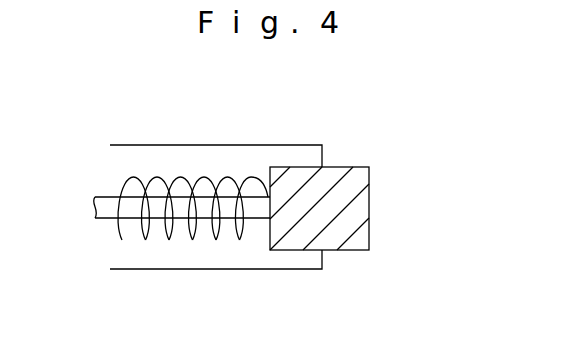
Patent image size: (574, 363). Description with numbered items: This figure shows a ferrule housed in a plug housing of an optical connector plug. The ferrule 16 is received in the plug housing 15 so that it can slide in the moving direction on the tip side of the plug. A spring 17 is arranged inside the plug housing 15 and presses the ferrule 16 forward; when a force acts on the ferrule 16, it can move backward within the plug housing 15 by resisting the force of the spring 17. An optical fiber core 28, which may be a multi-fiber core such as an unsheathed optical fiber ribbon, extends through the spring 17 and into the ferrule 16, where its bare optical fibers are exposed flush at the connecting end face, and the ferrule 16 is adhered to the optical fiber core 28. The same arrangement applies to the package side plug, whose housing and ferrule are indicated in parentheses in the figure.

The plug housing 15 is at (188, 144).
The ferrule 16 is at (369, 222).
The spring 17 is at (196, 240).
The optical fiber core 28 is at (132, 212).